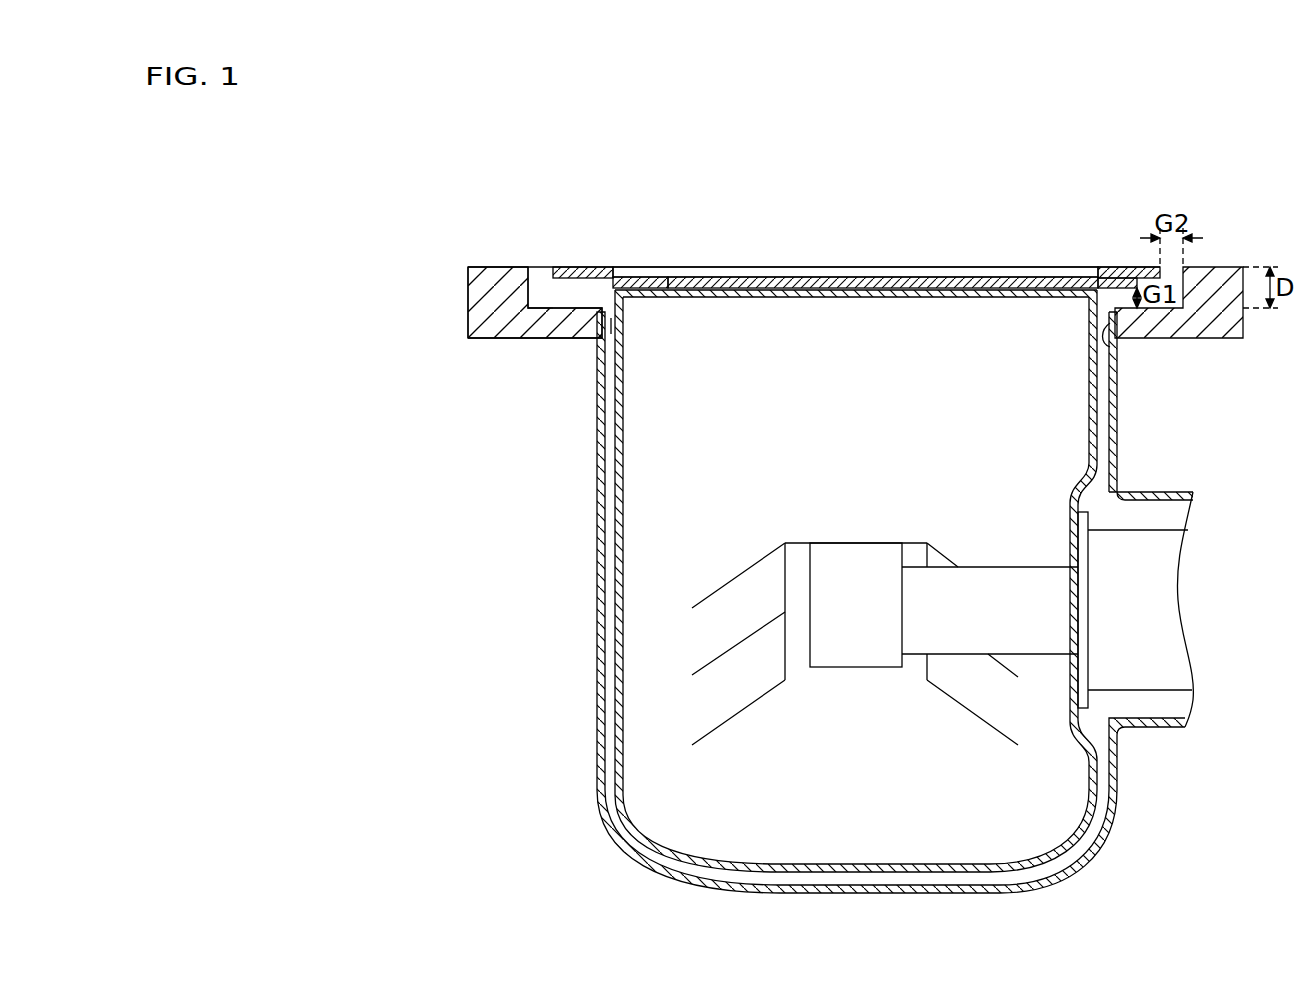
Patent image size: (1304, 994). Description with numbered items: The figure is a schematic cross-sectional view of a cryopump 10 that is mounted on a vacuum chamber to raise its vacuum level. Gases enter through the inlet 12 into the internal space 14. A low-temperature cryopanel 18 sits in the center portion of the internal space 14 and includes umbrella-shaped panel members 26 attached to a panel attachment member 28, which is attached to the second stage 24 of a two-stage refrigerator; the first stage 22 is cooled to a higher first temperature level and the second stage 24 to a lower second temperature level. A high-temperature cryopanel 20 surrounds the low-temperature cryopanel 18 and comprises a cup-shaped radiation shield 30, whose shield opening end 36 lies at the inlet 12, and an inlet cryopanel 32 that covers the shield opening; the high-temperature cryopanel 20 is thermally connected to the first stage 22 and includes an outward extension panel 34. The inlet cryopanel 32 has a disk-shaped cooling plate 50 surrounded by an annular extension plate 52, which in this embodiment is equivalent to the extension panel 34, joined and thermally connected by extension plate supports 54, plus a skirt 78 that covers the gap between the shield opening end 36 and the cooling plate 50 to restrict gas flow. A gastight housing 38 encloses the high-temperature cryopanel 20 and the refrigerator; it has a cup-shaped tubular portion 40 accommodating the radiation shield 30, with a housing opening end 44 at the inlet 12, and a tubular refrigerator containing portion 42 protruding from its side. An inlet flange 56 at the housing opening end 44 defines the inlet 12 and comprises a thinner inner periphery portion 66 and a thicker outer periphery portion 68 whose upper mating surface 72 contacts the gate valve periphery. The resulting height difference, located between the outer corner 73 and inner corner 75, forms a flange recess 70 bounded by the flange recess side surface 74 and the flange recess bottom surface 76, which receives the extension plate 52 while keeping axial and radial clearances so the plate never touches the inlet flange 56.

The cryopump 10 is at (369, 223).
The inlet 12 is at (844, 231).
The internal space 14 is at (1040, 793).
The low-temperature cryopanel 18 is at (881, 624).
The high-temperature cryopanel 20 is at (537, 458).
The first stage 22 is at (1095, 703).
The second stage 24 is at (848, 667).
The panel members 26 is at (742, 722).
The panel attachment member 28 is at (797, 543).
The radiation shield 30 is at (862, 602).
The inlet cryopanel 32 is at (814, 539).
The extension panel 34 is at (565, 267).
The shield opening end 36 is at (1089, 300).
The housing 38 is at (1120, 790).
The tubular portion 40 is at (1118, 400).
The refrigerator containing portion 42 is at (1170, 492).
The housing opening end 44 is at (1112, 346).
The cooling plate 50 is at (716, 284).
The extension plate 52 is at (603, 267).
The extension plate supports 54 is at (662, 282).
The inlet flange 56 is at (1228, 338).
The inner periphery portion 66 is at (560, 330).
The outer periphery portion 68 is at (515, 308).
The flange recess 70 is at (572, 318).
The mating surface 72 is at (490, 267).
The corner 73 is at (468, 267).
The flange recess side surface 74 is at (540, 300).
The corner 75 is at (611, 322).
The flange recess bottom surface 76 is at (545, 320).
The skirt 78 is at (601, 405).